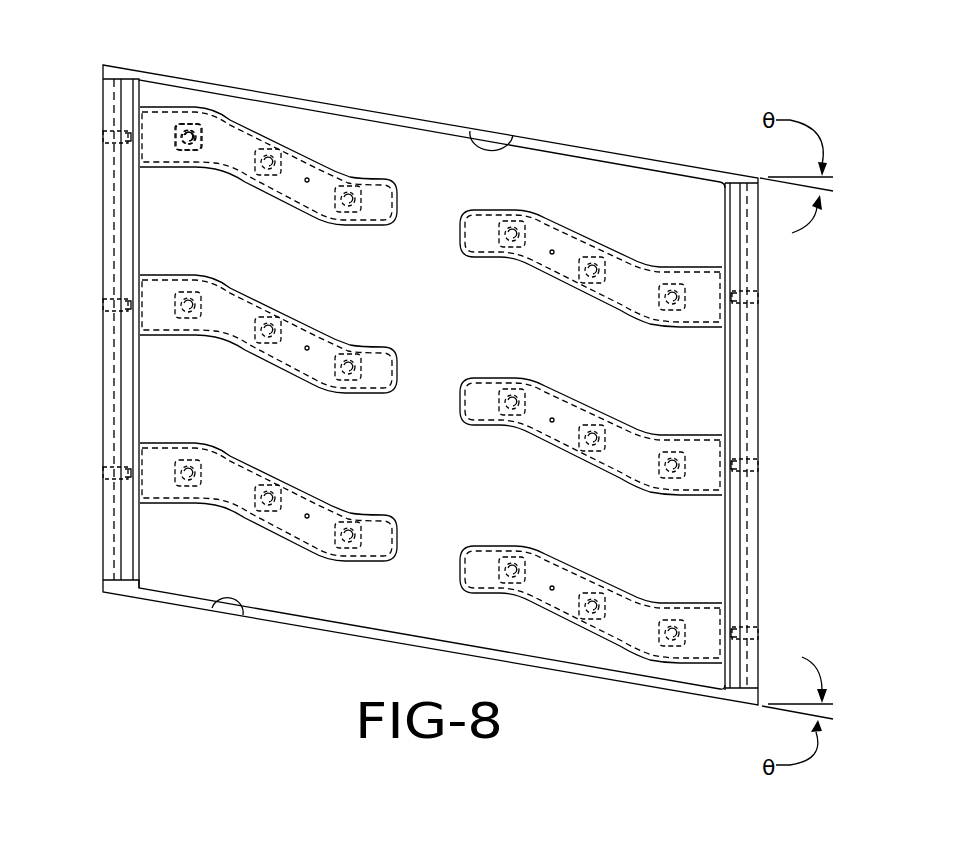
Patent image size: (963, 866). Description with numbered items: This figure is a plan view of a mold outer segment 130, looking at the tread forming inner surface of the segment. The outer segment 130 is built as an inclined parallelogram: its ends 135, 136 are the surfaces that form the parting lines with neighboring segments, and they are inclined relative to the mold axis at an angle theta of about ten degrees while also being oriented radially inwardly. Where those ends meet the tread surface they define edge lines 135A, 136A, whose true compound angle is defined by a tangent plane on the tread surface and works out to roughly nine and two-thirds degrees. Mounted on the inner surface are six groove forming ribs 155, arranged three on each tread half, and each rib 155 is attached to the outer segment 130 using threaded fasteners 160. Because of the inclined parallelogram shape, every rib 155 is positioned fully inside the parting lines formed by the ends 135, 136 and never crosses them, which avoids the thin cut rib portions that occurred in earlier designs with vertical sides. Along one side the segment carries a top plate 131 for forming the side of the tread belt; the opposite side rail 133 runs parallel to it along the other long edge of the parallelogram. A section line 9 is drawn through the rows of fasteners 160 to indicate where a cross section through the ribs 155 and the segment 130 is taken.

The section line 9- 9 is at (188, 305).
The mold outer segment 130 is at (80, 510).
The top plate 131 is at (750, 363).
The left frame rail 133 is at (110, 430).
The end 135 is at (137, 600).
The edge 135A is at (229, 597).
The end 136 is at (187, 80).
The edge 136A is at (513, 135).
The groove forming rib 155 is at (565, 252).
The threaded fastener 160 is at (200, 125).